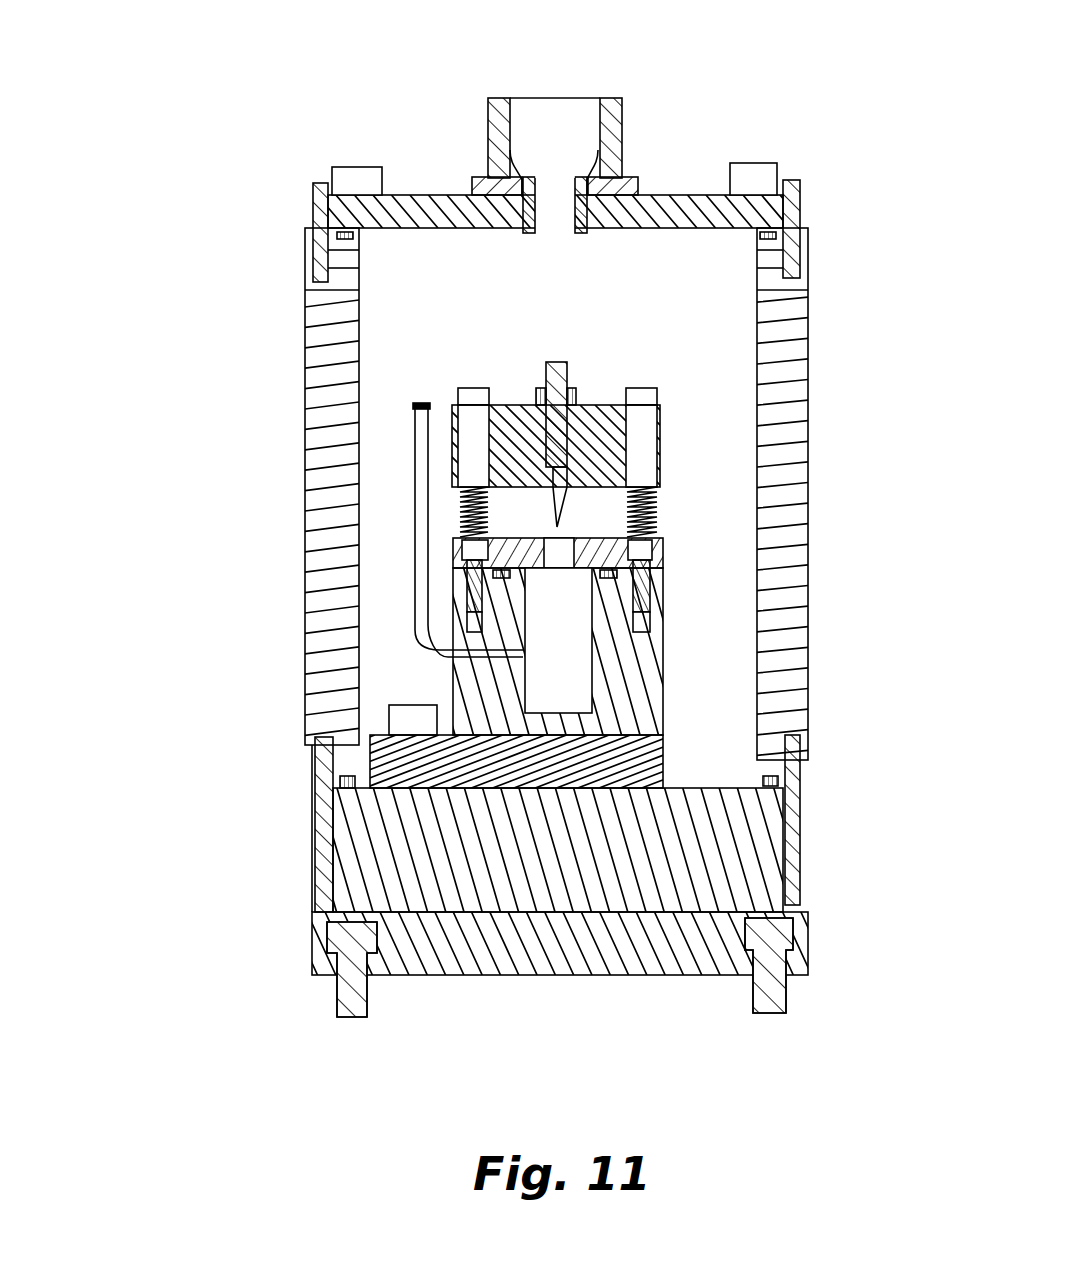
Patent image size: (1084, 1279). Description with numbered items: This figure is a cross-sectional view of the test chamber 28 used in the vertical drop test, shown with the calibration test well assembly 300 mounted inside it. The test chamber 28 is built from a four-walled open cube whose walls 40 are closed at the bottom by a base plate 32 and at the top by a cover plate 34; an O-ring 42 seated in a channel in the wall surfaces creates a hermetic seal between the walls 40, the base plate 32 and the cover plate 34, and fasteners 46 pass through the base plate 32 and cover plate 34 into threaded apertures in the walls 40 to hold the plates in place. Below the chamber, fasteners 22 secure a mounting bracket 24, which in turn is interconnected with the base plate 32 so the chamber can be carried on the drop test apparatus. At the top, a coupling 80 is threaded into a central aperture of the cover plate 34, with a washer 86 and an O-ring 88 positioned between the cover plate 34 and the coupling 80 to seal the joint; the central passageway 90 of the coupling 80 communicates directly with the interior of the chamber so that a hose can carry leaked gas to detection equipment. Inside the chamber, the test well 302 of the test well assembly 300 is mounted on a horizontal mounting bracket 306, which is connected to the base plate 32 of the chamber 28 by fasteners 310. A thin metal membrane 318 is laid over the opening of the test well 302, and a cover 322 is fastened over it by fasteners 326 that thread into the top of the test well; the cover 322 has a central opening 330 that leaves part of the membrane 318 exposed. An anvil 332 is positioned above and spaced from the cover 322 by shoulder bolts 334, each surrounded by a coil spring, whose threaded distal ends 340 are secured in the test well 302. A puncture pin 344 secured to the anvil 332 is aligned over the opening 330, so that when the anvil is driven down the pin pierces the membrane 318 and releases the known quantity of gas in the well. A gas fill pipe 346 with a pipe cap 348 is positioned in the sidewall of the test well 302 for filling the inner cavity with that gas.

The fasteners 22 is at (352, 1008).
The mounting bracket 24 is at (806, 952).
The test chamber 28 is at (275, 402).
The base plate 32 is at (730, 838).
The cover plate 34 is at (660, 207).
The walls 40 is at (322, 308).
The O-ring 42 is at (345, 780).
The fasteners 46 is at (318, 185).
The coupling 80 is at (610, 100).
The washer 86 is at (478, 188).
The O-ring 88 is at (508, 143).
The central passageway 90 is at (544, 122).
The test well assembly 300 is at (242, 125).
The test well 302 is at (640, 684).
The horizontal mounting bracket 306 is at (612, 760).
The fasteners 310 is at (413, 723).
The membrane 318 is at (553, 572).
The cover 322 is at (602, 535).
The fasteners 326 is at (653, 548).
The central opening 330 is at (555, 548).
The anvil 332 is at (597, 405).
The shoulder bolts 334 is at (470, 390).
The distal ends 340 is at (572, 660).
The puncture pin 344 is at (557, 360).
The gas fill pipe 346 is at (412, 550).
The pipe cap 348 is at (420, 405).